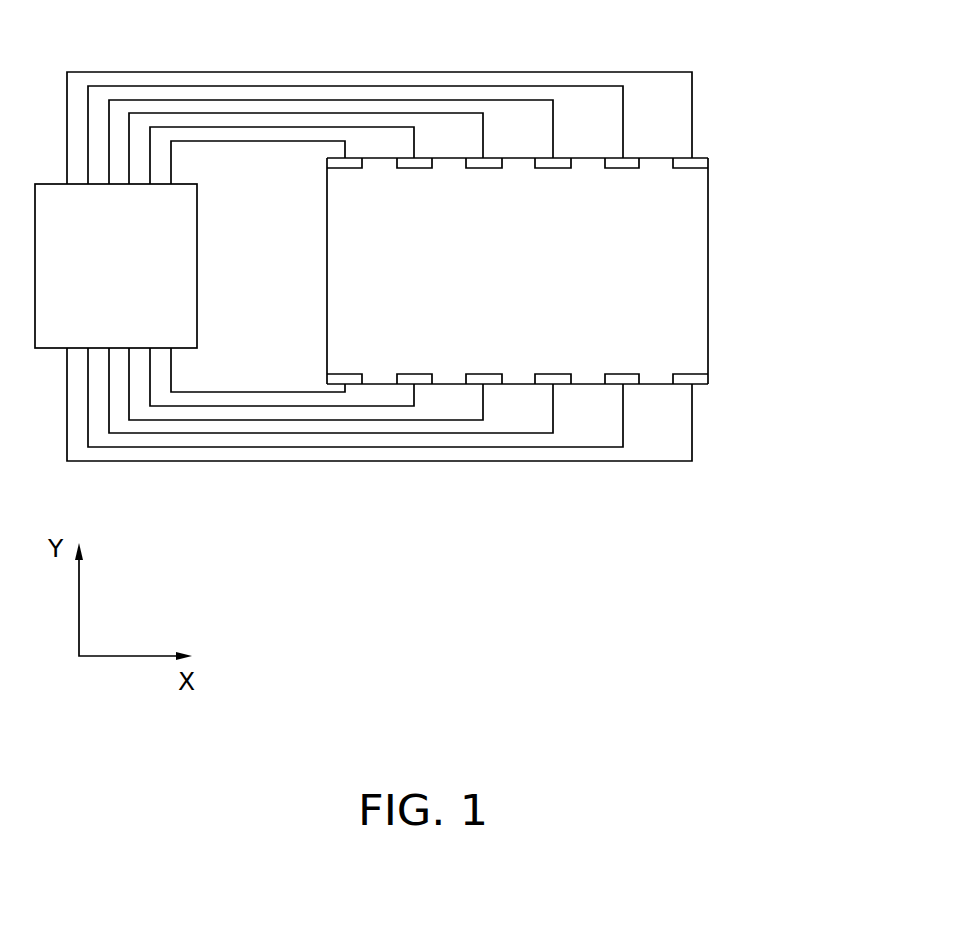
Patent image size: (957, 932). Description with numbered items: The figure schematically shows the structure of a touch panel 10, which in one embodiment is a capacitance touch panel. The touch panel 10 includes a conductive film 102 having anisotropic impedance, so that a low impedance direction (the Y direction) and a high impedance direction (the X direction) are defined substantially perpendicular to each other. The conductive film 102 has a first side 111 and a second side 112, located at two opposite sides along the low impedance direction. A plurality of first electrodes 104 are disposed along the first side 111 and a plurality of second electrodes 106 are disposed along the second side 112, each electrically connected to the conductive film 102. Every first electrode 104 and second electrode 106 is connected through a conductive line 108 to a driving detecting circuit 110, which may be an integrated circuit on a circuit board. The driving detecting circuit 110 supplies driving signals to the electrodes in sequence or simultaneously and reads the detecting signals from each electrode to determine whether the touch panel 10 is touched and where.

The touch panel 10 is at (531, 80).
The conductive film 102 is at (677, 277).
The first electrodes 104 is at (698, 160).
The second electrodes 106 is at (698, 377).
The conductive line 108 is at (258, 435).
The driving detecting circuit 110 is at (165, 263).
The first side 111 is at (658, 157).
The second side 112 is at (657, 384).